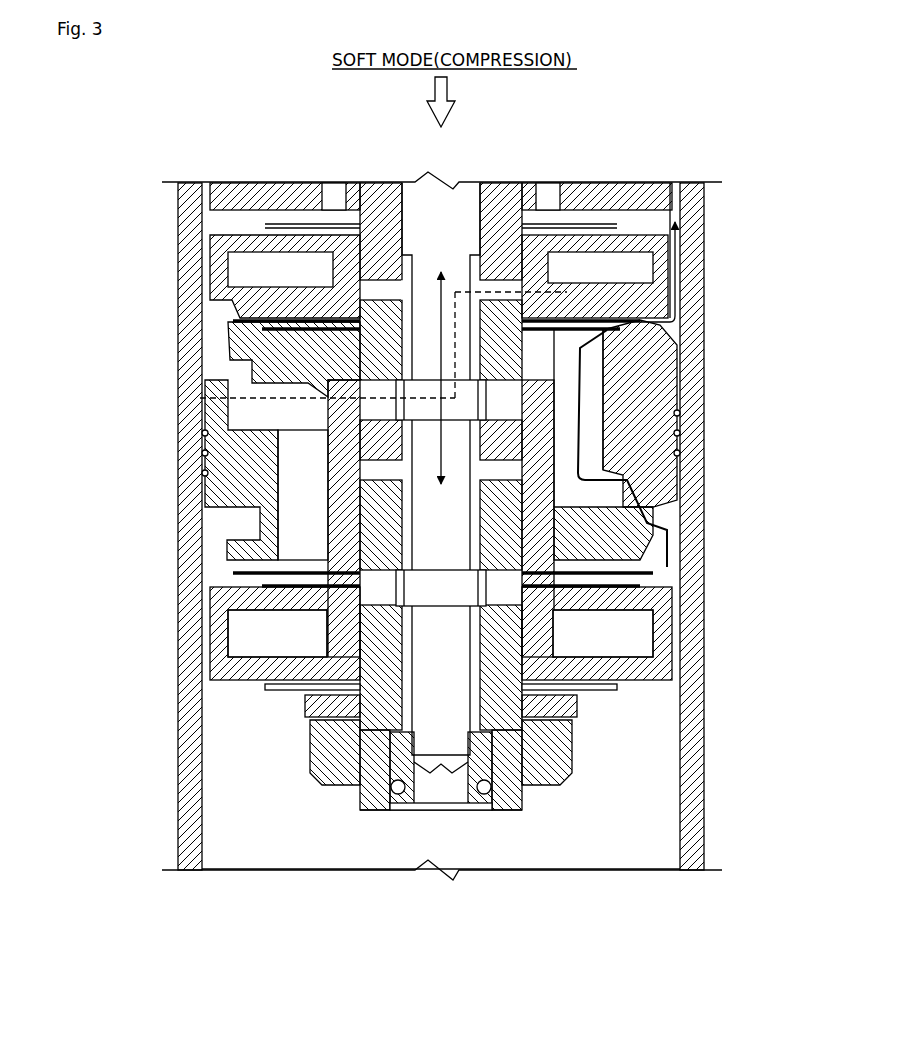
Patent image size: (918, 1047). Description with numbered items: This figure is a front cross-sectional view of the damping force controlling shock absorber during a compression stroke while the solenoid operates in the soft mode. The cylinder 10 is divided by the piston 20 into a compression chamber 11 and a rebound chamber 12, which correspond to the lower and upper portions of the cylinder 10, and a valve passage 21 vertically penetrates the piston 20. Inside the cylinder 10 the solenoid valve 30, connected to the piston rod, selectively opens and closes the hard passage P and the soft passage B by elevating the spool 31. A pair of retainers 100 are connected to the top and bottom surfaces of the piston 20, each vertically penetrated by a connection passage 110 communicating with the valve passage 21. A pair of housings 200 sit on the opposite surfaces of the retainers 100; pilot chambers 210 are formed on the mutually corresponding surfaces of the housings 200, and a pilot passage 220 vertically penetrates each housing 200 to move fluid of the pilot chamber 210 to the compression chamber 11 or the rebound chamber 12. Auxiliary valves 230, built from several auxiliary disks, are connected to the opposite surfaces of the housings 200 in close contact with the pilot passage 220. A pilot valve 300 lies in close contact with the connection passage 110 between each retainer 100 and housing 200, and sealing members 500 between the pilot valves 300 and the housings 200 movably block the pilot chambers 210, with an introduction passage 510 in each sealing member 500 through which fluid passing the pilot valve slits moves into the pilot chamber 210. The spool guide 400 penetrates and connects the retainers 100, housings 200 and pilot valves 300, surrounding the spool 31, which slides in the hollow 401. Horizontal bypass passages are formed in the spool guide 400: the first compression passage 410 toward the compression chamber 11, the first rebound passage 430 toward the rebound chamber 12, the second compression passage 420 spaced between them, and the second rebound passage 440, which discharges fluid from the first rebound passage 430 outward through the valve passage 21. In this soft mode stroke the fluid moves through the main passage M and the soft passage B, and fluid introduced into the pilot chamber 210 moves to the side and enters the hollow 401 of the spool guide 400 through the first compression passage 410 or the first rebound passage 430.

The cylinder 10 is at (700, 278).
The compression chamber 11 is at (627, 758).
The rebound chamber 12 is at (212, 216).
The piston 20 is at (688, 440).
The valve passage 21 is at (594, 410).
The solenoid valve 30 is at (462, 195).
The spool 31 is at (474, 268).
The retainer 100 is at (212, 345).
The connection passage 110 is at (300, 518).
The housing 200 is at (200, 270).
The pilot chamber 210 is at (245, 633).
The pilot passage 220 is at (310, 700).
The auxiliary valve 230 is at (300, 687).
The pilot valve 300 is at (280, 318).
The spool guide 400 is at (515, 762).
The hollow 401 is at (445, 716).
The first compression passage 410 is at (482, 578).
The second compression passage 420 is at (470, 498).
The first rebound passage 430 is at (470, 310).
The second rebound passage 440 is at (482, 400).
The sealing member 500 is at (620, 310).
The introduction passage 510 is at (565, 625).
The soft passage B is at (245, 396).
The main passage M is at (660, 520).
The hard passage P is at (648, 236).